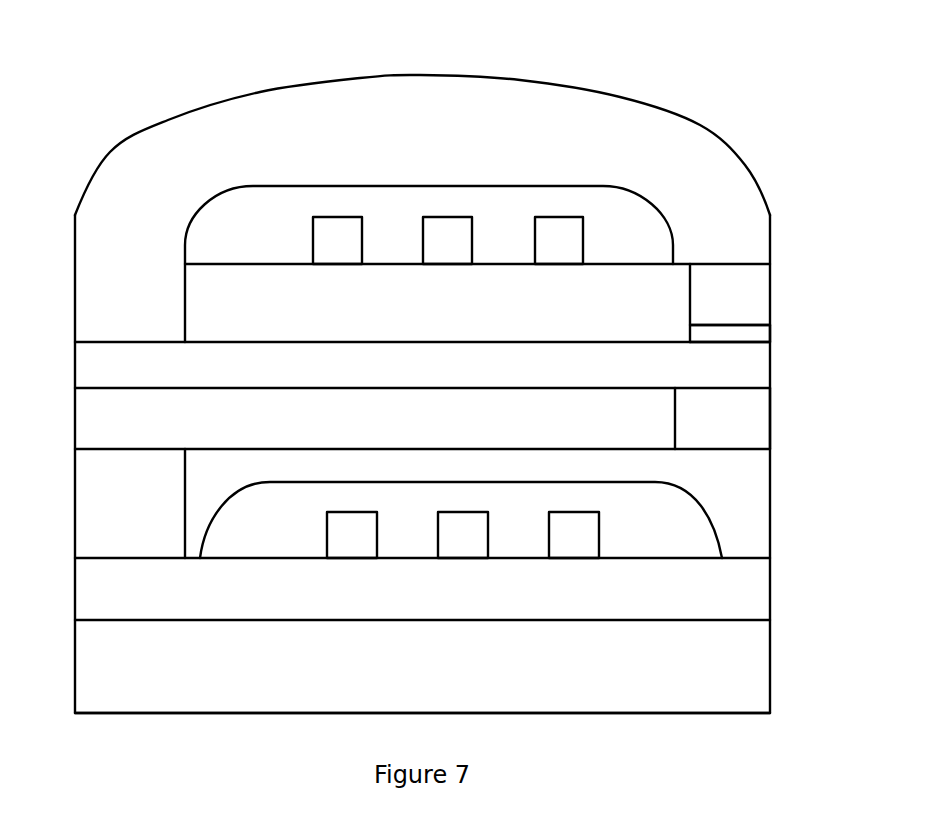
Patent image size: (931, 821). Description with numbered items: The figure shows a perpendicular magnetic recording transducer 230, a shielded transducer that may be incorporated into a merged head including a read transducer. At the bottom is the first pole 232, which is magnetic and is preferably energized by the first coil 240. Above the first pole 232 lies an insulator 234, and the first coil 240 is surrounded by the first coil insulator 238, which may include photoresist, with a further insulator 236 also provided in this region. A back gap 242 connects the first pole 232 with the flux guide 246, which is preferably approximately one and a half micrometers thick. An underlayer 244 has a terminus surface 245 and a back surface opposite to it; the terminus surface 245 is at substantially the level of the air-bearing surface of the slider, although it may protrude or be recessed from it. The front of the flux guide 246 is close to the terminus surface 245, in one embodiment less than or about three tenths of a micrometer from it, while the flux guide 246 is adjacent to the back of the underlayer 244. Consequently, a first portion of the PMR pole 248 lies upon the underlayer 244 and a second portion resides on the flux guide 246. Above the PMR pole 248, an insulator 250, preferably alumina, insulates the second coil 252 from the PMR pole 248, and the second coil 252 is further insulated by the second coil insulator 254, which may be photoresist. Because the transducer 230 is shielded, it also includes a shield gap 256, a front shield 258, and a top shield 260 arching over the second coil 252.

The perpendicular magnetic recording transducer 230 is at (404, 32).
The first pole 232 is at (75, 683).
The insulator 234 is at (770, 600).
The insulator 236 is at (770, 542).
The first coil insulator 238 is at (713, 523).
The first coil 240 is at (575, 558).
The back gap 242 is at (75, 542).
The underlayer 244 is at (703, 388).
The terminus surface 245 is at (793, 421).
The flux guide 246 is at (75, 405).
The PMR pole 248 is at (75, 373).
The insulator 250 is at (185, 310).
The second coil 252 is at (548, 217).
The second coil insulator 254 is at (660, 217).
The shield gap 256 is at (770, 333).
The front shield 258 is at (770, 277).
The top shield 260 is at (168, 121).